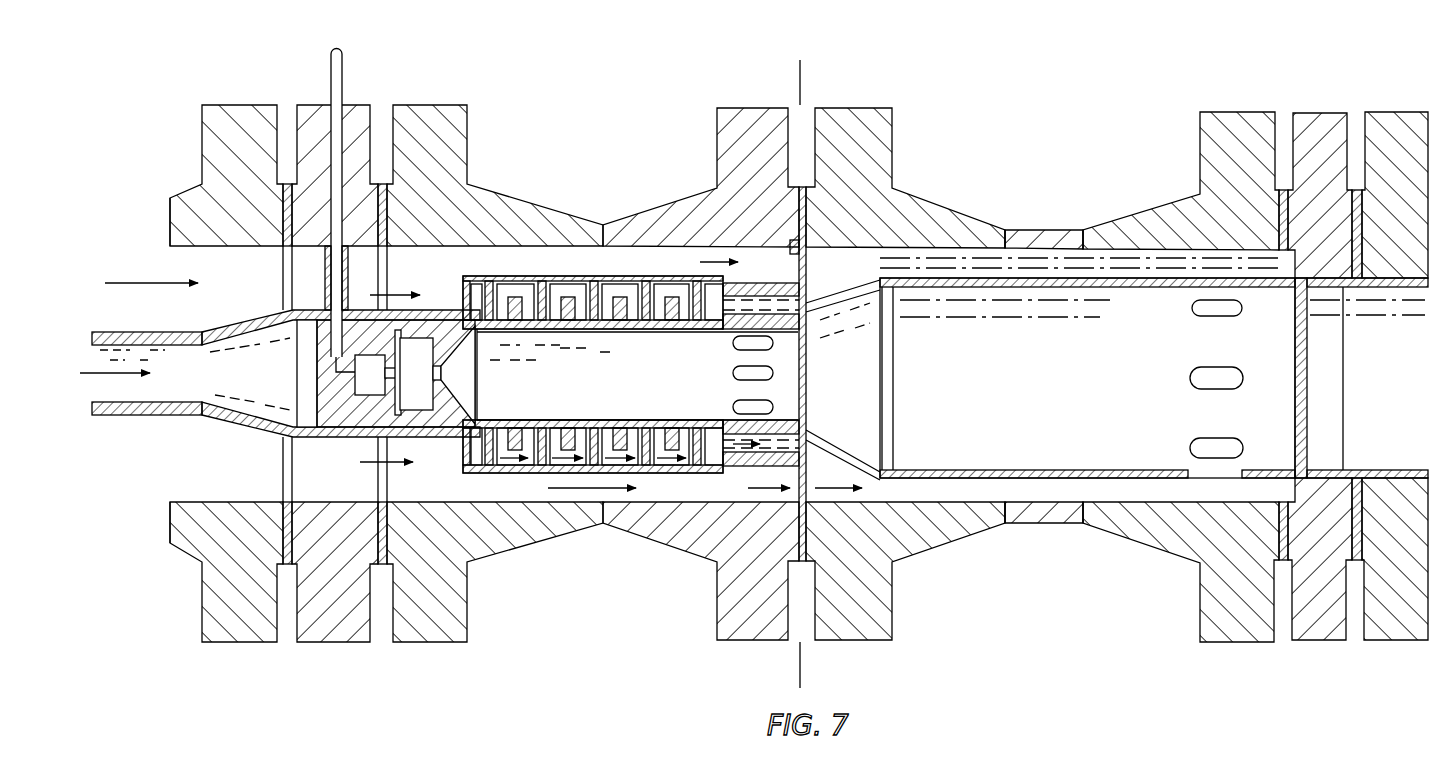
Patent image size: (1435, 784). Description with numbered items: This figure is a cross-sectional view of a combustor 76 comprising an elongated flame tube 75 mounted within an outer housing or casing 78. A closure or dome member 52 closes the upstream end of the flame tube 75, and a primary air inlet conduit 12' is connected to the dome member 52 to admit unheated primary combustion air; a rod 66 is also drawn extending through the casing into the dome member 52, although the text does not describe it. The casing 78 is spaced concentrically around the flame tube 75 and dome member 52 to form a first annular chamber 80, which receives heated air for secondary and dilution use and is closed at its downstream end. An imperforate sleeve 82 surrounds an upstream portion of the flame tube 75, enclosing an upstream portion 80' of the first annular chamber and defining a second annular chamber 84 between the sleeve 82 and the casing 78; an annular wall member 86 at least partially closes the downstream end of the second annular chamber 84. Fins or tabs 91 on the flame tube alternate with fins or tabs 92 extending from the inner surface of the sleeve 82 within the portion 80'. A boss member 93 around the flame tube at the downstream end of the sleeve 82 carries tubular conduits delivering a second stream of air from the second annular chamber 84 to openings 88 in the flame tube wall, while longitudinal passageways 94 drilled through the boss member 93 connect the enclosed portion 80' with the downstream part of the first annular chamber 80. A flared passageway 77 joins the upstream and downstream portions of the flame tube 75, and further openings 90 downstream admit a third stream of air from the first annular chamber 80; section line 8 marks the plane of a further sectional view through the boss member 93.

The section line 8- 8 is at (806, 78).
The primary air inlet conduit 12' is at (141, 360).
The closure or dome member 52 is at (368, 437).
The actuating rod 66 is at (344, 63).
The elongated flame tube 75 is at (590, 333).
The combustor 76 is at (600, 553).
The flared passageway 77 is at (830, 320).
The outer housing or casing 78 is at (532, 212).
The first annular chamber 80 is at (721, 376).
The upstream portion of first annular chamber 80' is at (576, 284).
The imperforate sleeve 82 is at (563, 277).
The second annular chamber 84 is at (692, 272).
The annular wall member 86 is at (790, 253).
The opening 88 is at (733, 373).
The opening 90 is at (1190, 378).
The fins or tabs 91 is at (522, 447).
The fins or tabs 92 is at (600, 447).
The boss member 93 is at (788, 427).
The longitudinal passageways 94 is at (792, 447).